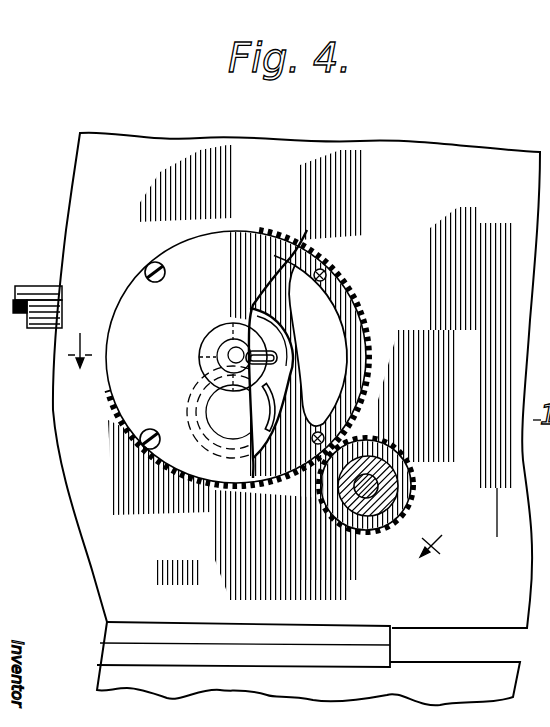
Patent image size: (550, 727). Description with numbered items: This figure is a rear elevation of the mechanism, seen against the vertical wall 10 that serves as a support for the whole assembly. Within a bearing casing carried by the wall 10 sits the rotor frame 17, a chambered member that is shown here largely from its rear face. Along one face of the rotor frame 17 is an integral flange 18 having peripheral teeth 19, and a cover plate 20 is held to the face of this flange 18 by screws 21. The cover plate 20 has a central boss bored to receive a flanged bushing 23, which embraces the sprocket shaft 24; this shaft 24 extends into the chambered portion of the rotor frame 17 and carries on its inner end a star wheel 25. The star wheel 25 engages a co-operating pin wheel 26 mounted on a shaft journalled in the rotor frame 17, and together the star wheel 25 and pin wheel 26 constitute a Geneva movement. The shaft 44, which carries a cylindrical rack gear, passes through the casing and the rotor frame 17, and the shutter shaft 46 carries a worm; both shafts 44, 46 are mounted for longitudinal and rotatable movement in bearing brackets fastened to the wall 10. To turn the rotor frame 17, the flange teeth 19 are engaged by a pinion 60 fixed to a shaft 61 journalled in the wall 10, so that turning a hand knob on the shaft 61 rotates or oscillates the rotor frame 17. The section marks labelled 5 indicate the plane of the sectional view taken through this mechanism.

The wall 10 is at (296, 419).
The rotor frame 17 is at (285, 325).
The integral flange 18 is at (326, 272).
The peripheral teeth 19 is at (352, 306).
The cover plate 20 is at (236, 357).
The screws 21 is at (166, 265).
The flanged bushing 23 is at (215, 363).
The sprocket shaft 24 is at (212, 345).
The star wheel 25 is at (277, 360).
The pin wheel 26 is at (277, 412).
The shaft 44 is at (37, 327).
The shutter shaft 46 is at (42, 275).
The pinion 60 is at (408, 472).
The shaft 61 is at (398, 492).
The section line 5 is at (255, 457).